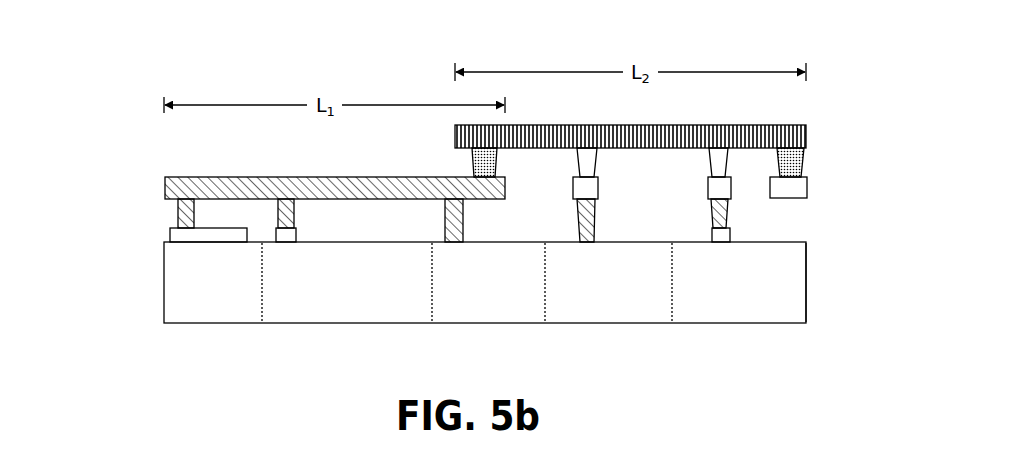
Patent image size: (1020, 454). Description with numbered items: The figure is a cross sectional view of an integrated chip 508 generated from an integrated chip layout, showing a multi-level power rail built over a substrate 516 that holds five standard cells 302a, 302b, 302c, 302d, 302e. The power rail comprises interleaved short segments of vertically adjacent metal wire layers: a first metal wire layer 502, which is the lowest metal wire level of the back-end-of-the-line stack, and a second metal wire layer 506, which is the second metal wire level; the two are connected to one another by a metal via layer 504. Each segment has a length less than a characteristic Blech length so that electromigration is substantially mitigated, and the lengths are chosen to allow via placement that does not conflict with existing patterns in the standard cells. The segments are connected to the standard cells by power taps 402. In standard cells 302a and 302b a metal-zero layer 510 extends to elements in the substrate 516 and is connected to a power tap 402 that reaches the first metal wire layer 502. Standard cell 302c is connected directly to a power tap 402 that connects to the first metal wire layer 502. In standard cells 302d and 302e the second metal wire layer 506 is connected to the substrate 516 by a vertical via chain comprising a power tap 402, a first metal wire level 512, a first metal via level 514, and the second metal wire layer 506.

The integrated chip 508 is at (115, 78).
The first metal wire layer 502 is at (240, 174).
The power tap 402 is at (177, 215).
The metal 0 layer 510 is at (169, 233).
The metal via layer 504 is at (471, 166).
The second metal wire layer 506 is at (794, 122).
The first metal via level 514 is at (598, 166).
The first metal wire level 512 is at (600, 190).
The substrate 516 is at (831, 242).
The standard cell 302a is at (226, 282).
The standard cell 302b is at (377, 282).
The standard cell 302c is at (505, 282).
The standard cell 302d is at (629, 282).
The standard cell 302e is at (761, 282).